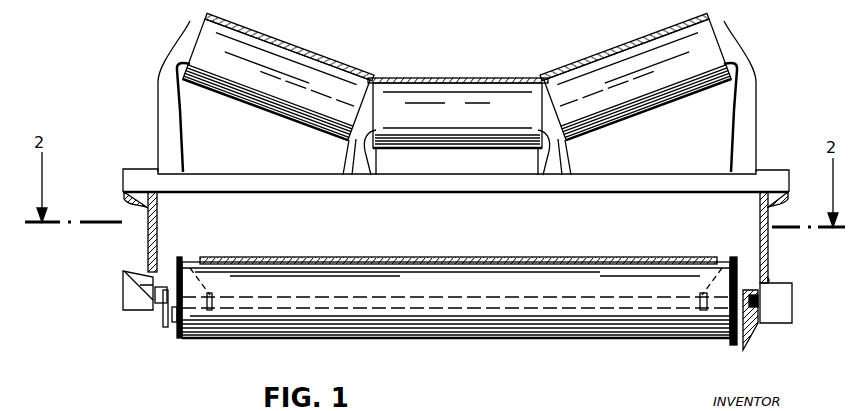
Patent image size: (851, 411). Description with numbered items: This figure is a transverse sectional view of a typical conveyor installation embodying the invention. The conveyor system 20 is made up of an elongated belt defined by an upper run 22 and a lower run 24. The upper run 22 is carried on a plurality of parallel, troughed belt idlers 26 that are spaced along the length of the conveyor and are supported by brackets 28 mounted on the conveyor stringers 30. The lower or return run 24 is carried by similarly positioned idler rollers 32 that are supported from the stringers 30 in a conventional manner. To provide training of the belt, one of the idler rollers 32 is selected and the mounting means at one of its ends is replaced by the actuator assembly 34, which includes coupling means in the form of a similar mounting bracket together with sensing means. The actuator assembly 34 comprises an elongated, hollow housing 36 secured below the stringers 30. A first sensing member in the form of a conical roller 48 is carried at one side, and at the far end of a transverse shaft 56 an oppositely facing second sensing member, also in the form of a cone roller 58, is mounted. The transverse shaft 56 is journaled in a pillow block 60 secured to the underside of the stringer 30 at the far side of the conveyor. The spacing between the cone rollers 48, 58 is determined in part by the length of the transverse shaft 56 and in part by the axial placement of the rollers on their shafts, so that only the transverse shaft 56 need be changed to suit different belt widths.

The conveyor system 20 is at (772, 67).
The upper run 22 is at (412, 78).
The lower run 24 is at (284, 257).
The troughed belt idlers 26 is at (217, 80).
The brackets 28 is at (157, 100).
The conveyor stringers 30 is at (157, 223).
The idler rollers 32 is at (472, 327).
The actuator assembly 34 is at (767, 331).
The housing 36 is at (780, 307).
The conical roller 48 is at (733, 342).
The transverse shaft 56 is at (540, 310).
The cone roller 58 is at (181, 338).
The pillow block 60 is at (126, 306).